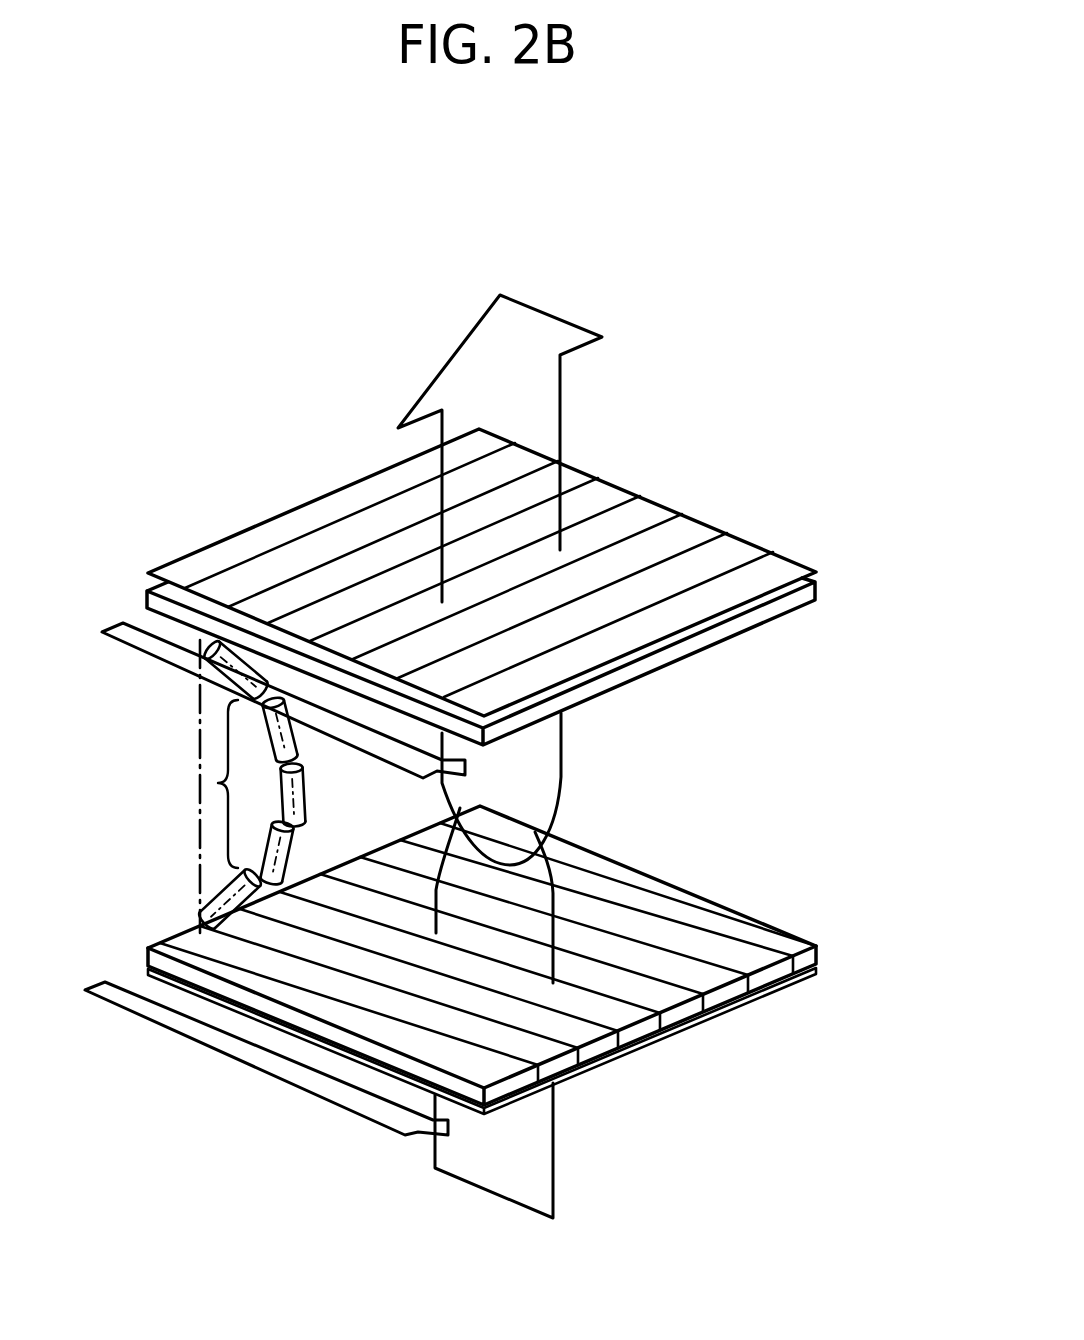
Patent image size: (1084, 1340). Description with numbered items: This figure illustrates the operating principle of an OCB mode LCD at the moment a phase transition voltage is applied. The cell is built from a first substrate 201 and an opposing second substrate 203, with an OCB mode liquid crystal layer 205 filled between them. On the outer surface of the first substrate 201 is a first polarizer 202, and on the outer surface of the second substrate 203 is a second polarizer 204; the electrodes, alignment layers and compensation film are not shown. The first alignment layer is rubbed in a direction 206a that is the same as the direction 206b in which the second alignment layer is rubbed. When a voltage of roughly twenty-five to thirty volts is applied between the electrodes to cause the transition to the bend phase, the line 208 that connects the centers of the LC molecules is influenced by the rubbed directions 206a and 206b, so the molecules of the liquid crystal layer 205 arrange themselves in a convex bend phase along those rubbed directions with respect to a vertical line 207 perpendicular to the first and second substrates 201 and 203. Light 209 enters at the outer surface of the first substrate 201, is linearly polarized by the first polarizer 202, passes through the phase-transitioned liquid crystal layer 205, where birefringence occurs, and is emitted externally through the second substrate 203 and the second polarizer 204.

The first substrate 201 is at (812, 955).
The first polarizer 202 is at (782, 985).
The second substrate 203 is at (814, 600).
The second polarizer 204 is at (792, 557).
The liquid crystal layer 205 is at (218, 783).
The direction in which the first alignment layer is rubbed 206a is at (203, 1033).
The direction in which the second alignment layer is rubbed 206b is at (148, 643).
The vertical line 207 is at (197, 847).
The line that connects the centers of the LC molecules 208 is at (293, 793).
The light 209 is at (543, 1133).